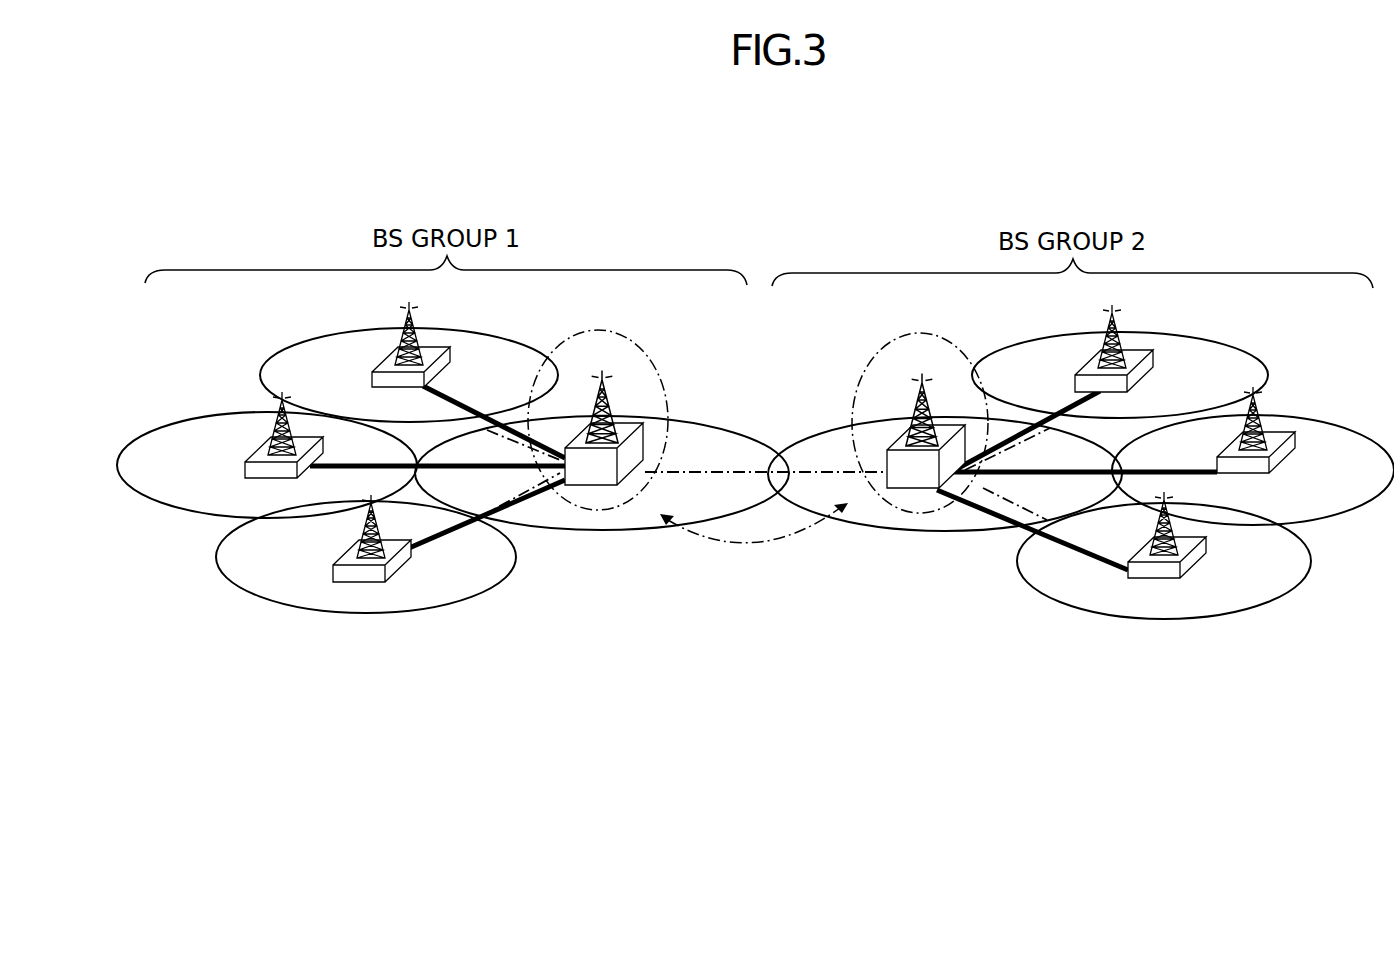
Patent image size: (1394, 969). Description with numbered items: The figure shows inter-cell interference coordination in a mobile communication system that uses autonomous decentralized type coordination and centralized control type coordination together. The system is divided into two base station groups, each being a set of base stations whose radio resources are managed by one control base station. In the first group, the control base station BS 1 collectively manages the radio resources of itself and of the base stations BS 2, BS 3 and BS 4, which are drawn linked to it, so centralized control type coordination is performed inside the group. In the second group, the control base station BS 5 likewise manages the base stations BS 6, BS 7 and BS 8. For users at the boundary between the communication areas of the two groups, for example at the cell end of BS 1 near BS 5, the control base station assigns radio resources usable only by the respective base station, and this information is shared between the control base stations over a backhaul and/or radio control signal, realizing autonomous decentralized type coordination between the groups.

The control base station BS1 1 is at (602, 450).
The base station BS2 2 is at (409, 362).
The base station BS3 3 is at (267, 455).
The base station BS4 4 is at (366, 554).
The control base station BS5 5 is at (945, 452).
The base station BS6 6 is at (1120, 361).
The base station BS7 7 is at (1253, 456).
The base station BS8 8 is at (1164, 555).